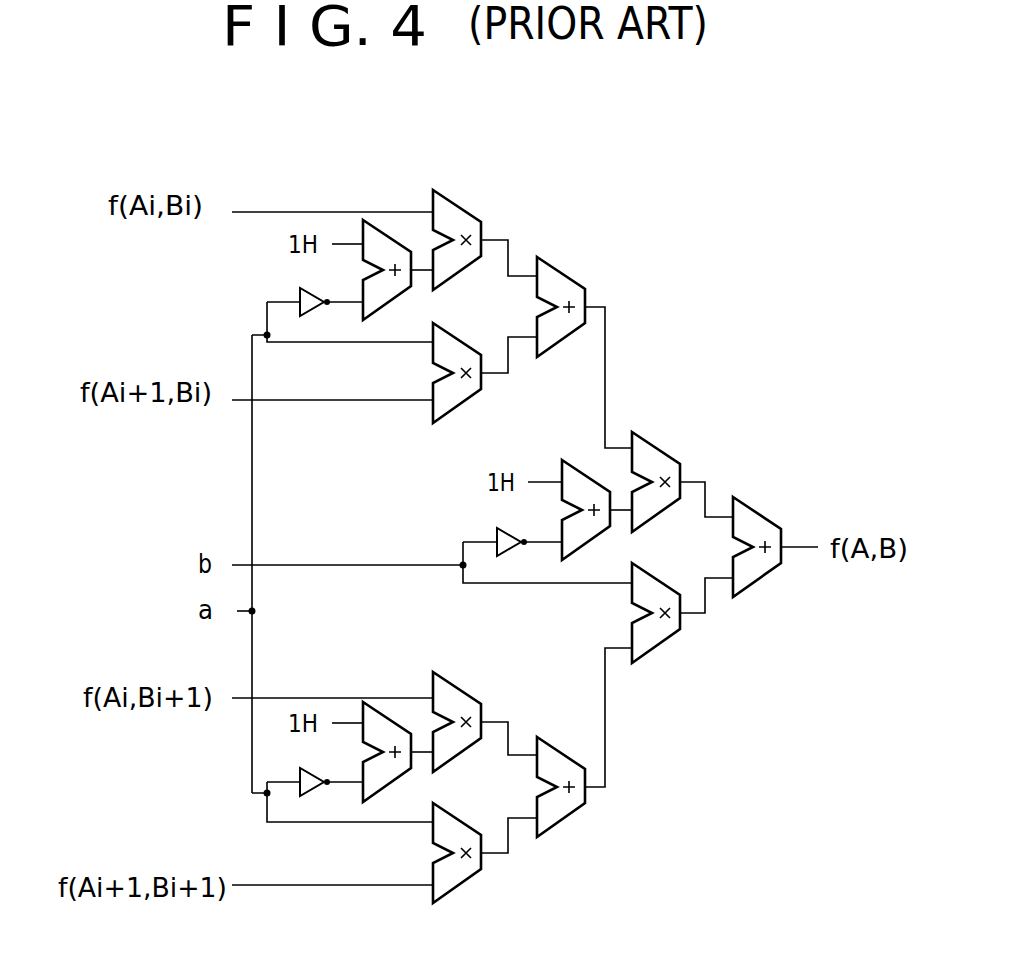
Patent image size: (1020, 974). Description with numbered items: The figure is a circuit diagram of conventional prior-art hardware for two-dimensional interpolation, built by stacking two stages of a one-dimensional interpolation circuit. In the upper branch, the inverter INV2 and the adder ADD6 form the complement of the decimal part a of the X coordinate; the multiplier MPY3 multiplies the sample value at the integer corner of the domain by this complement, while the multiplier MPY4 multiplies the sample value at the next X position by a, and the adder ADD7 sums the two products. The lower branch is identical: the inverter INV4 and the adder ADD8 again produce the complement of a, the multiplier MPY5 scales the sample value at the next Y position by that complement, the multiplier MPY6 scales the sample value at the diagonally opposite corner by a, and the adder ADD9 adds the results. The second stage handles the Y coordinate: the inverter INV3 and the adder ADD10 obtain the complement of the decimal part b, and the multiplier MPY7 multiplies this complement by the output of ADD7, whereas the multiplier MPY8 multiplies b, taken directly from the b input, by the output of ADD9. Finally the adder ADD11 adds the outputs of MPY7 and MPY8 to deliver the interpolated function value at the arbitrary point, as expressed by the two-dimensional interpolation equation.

The adder ADD6 is at (382, 232).
The multiplier MPY3 is at (463, 207).
The multiplier MPY4 is at (447, 420).
The adder ADD7 is at (572, 278).
The inverter INV2 is at (320, 316).
The adder ADD10 is at (564, 462).
The multiplier MPY7 is at (707, 420).
The adder ADD11 is at (770, 518).
The multiplier MPY8 is at (667, 642).
The inverter INV3 is at (508, 552).
The adder ADD8 is at (372, 702).
The multiplier MPY5 is at (470, 682).
The inverter INV4 is at (320, 797).
The multiplier MPY6 is at (452, 895).
The adder ADD9 is at (568, 820).